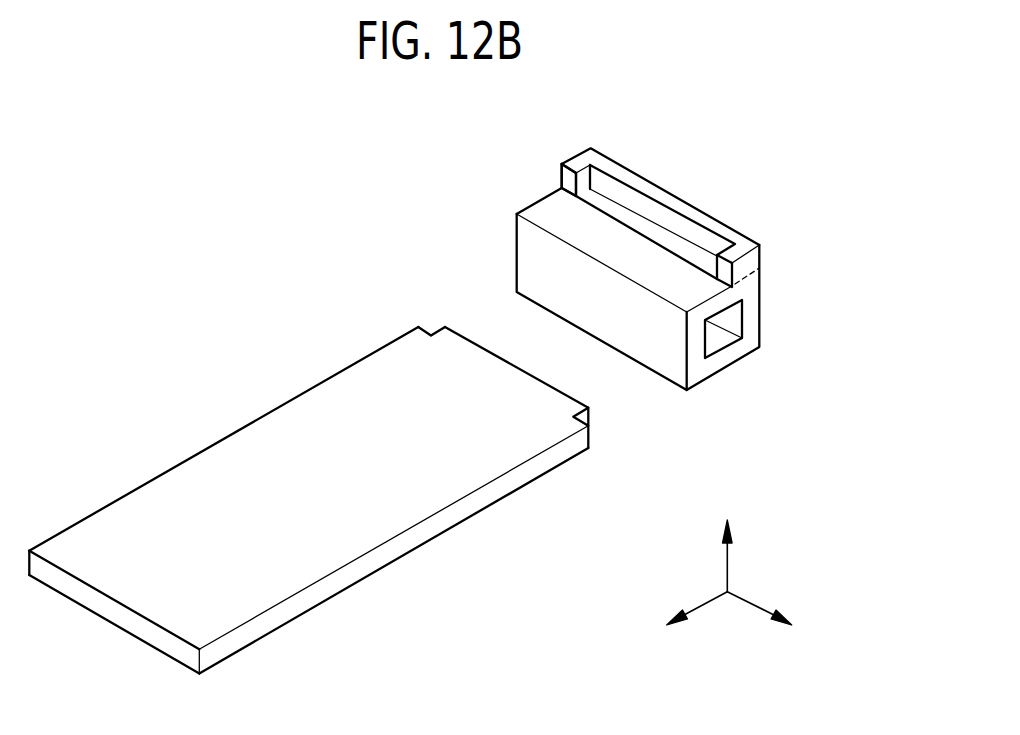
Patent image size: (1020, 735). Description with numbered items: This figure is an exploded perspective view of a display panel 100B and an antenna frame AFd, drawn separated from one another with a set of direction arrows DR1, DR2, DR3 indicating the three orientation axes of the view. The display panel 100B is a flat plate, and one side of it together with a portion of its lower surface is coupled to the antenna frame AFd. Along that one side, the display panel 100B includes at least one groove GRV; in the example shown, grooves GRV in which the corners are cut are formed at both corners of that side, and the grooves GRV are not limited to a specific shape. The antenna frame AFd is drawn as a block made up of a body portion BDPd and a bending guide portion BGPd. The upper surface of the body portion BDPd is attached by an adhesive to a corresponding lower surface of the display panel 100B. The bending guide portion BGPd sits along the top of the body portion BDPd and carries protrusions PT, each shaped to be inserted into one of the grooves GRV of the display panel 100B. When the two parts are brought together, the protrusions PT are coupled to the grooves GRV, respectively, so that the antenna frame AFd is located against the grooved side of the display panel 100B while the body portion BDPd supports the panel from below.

The display panel 100B is at (350, 383).
The groove GRV is at (424, 303).
The antenna frame AFd is at (706, 249).
The body portion BDPd is at (753, 319).
The bending guide portion BGPd is at (753, 261).
The protrusion PT is at (568, 180).
The first direction DR1 is at (677, 617).
The second direction DR2 is at (779, 617).
The third direction DR3 is at (728, 541).